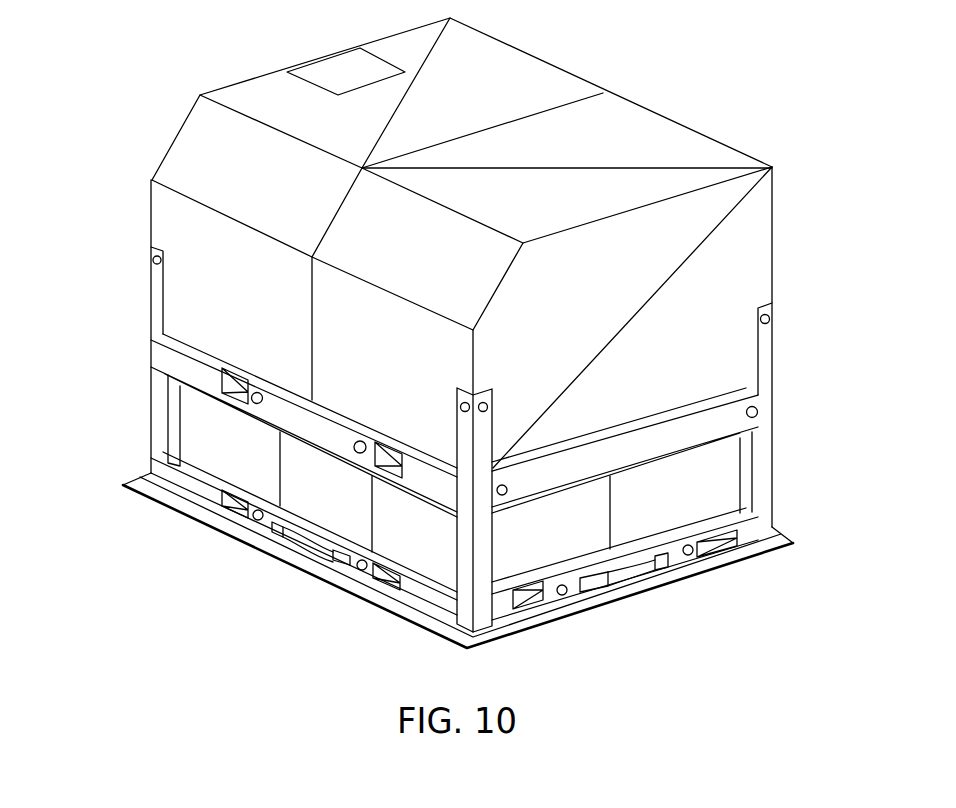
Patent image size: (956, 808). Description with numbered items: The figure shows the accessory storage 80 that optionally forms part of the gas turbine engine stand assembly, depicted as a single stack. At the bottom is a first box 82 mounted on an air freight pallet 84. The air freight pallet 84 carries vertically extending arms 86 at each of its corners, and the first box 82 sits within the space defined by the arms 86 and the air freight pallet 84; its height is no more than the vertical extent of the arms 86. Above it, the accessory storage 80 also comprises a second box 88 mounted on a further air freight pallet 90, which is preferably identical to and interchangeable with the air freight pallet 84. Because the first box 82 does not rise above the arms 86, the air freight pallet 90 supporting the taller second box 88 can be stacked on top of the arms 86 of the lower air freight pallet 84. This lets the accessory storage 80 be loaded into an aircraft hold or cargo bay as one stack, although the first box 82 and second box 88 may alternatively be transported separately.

The accessory storage 80 is at (118, 115).
The first box 82 is at (200, 445).
The air freight pallet 84 is at (758, 528).
The vertically extending arms 86 is at (762, 445).
The second box 88 is at (755, 230).
The air freight pallet 90 is at (177, 360).